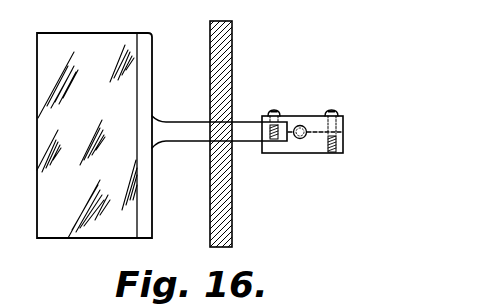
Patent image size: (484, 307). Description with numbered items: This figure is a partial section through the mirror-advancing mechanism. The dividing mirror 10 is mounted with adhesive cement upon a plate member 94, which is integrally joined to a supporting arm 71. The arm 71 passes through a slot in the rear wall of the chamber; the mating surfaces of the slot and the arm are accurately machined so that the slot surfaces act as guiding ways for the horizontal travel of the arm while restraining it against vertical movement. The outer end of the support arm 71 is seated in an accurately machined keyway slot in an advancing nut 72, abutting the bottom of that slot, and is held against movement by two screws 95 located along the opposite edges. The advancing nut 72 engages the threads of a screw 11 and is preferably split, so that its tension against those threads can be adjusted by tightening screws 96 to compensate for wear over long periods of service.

The mirror glass panel 10 is at (61, 50).
The plate member 94 is at (144, 42).
The supporting arm 71 is at (185, 132).
The advancing nut 72 is at (310, 145).
The screw 11 is at (295, 141).
The screws 95 is at (273, 110).
The screws 96 is at (333, 110).